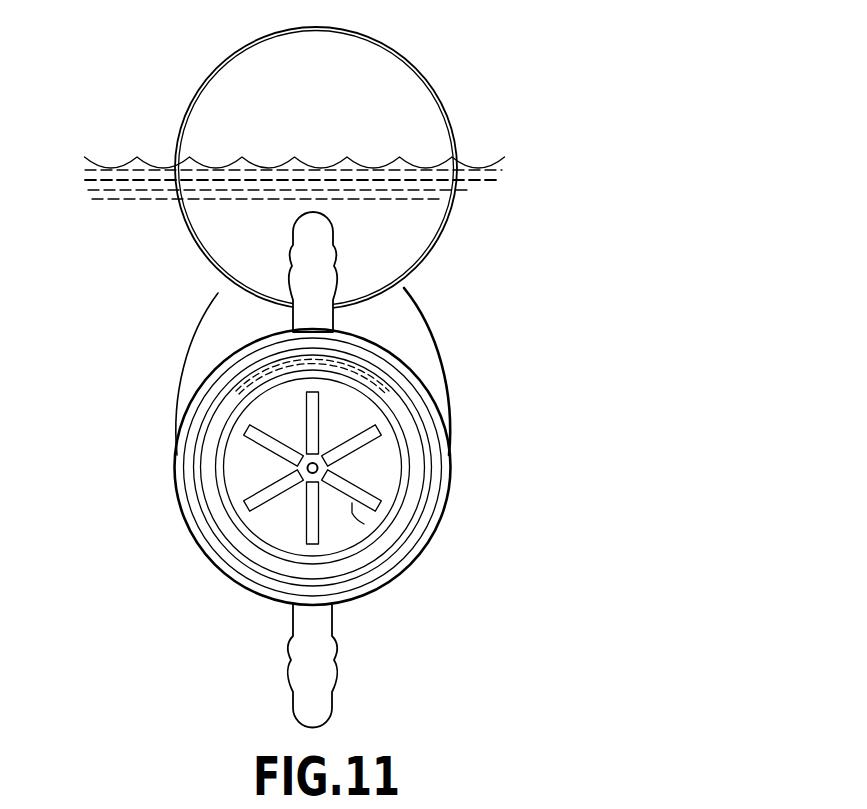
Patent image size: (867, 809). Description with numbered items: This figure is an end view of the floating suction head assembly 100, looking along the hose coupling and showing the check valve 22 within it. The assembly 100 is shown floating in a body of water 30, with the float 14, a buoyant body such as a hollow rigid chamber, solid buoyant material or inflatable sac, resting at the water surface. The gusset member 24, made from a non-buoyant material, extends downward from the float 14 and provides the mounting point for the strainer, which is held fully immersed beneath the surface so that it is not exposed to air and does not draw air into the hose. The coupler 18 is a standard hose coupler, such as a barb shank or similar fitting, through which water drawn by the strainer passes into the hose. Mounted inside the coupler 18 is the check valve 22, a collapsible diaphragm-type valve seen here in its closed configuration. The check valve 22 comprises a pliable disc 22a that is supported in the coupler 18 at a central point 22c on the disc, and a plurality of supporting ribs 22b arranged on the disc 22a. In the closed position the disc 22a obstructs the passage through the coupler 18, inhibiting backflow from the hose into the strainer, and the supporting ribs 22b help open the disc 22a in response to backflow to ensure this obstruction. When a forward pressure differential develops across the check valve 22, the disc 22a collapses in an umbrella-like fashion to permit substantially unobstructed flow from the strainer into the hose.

The floating suction head assembly 100 is at (332, 364).
The float 14 is at (327, 128).
The body of water 30 is at (103, 190).
The gusset member 24 is at (200, 307).
The coupler 18 is at (388, 347).
The check valve 22 is at (336, 489).
The pliable disc 22a is at (384, 480).
The supporting ribs 22b is at (321, 525).
The central point 22c is at (307, 468).